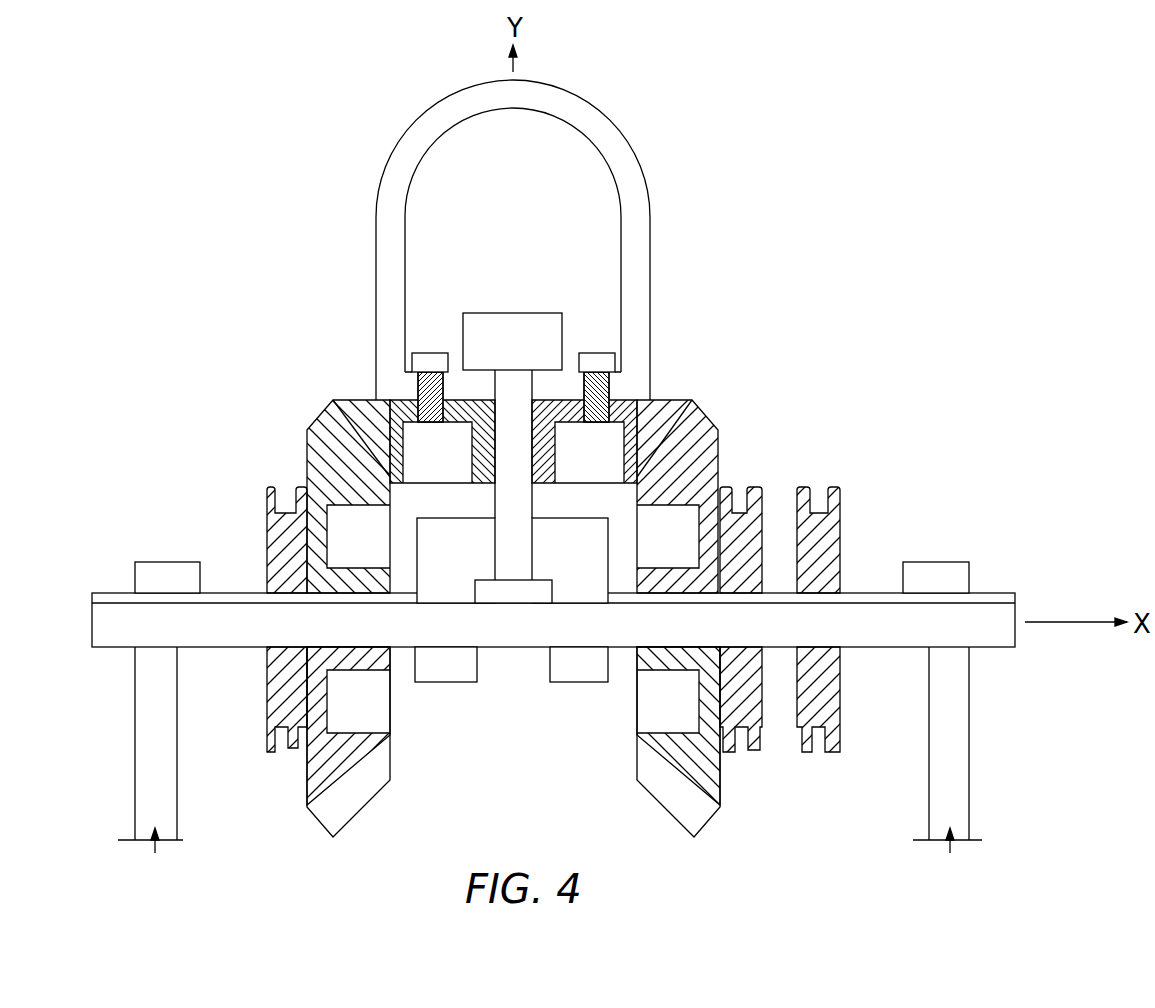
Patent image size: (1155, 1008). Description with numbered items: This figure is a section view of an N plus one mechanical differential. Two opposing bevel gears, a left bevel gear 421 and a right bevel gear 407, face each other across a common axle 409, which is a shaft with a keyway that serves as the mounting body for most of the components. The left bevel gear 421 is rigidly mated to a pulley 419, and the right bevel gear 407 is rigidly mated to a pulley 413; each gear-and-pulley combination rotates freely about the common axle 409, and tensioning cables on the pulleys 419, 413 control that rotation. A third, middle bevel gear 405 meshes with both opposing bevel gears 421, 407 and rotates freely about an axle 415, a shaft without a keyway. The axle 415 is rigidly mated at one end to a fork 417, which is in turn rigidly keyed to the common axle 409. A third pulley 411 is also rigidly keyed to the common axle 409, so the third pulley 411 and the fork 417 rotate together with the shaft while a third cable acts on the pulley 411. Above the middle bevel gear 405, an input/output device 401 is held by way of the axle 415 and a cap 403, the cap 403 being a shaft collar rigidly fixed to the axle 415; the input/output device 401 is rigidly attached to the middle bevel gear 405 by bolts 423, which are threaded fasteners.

The input/output device 401 is at (645, 172).
The cap 403 is at (540, 311).
The third bevel gear 405 is at (650, 400).
The right bevel gear 407 is at (722, 447).
The common axle 409 is at (982, 608).
The third pulley 411 is at (818, 750).
The pulley 413 is at (735, 750).
The axle 415 is at (510, 557).
The fork 417 is at (446, 684).
The pulley 419 is at (290, 745).
The left bevel gear 421 is at (310, 438).
The bolts 423 is at (424, 352).